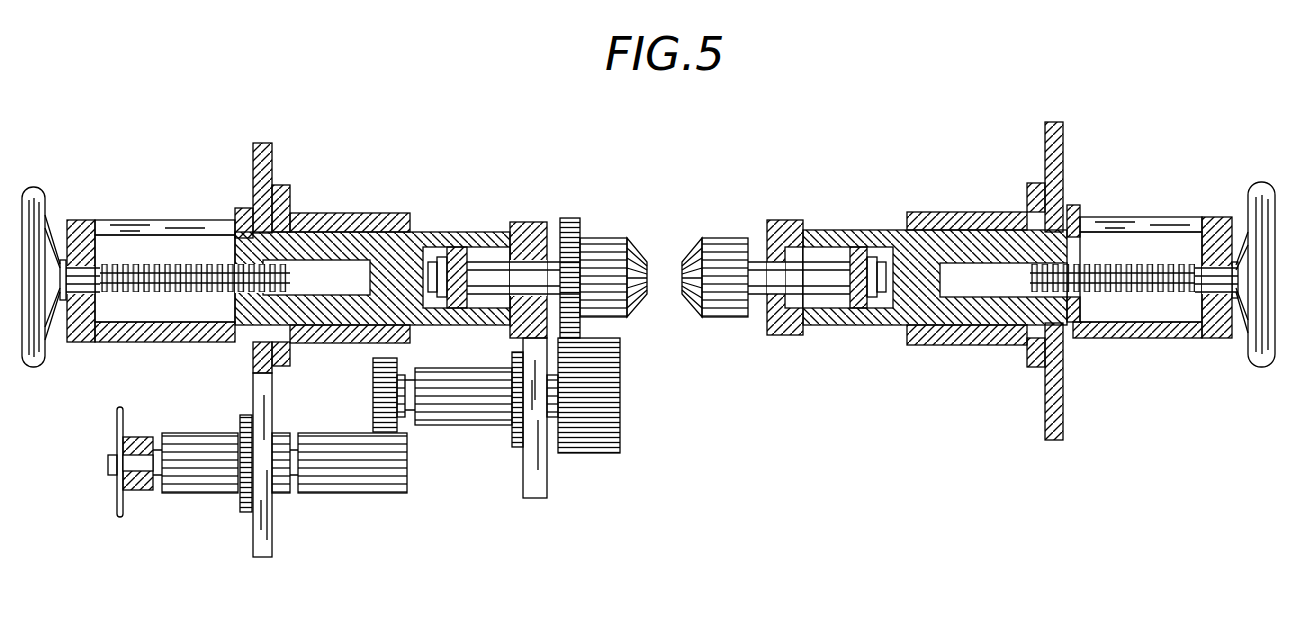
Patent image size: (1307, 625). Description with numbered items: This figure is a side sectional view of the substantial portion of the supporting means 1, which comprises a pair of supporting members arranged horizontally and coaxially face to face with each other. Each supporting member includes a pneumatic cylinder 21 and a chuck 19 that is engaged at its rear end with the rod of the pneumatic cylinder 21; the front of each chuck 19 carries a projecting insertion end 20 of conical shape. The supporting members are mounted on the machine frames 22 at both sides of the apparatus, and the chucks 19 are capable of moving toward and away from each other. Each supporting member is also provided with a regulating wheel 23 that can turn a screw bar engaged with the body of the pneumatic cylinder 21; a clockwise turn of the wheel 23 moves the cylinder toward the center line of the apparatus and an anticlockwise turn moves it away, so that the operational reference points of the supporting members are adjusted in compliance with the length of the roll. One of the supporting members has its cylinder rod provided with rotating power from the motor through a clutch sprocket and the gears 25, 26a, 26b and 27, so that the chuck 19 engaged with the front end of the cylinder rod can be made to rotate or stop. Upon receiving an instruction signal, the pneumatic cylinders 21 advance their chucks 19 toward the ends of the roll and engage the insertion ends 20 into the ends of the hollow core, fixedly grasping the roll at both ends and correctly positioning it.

The supporting means 1 is at (724, 422).
The chuck 19 is at (616, 224).
The insertion end 20 is at (640, 250).
The pneumatic cylinder 21 is at (450, 232).
The machine frame 22 is at (272, 155).
The regulating wheel 23 is at (45, 192).
The gear 25 is at (348, 495).
The gear 26a is at (372, 384).
The gear 26b is at (590, 456).
The gear 27 is at (568, 216).